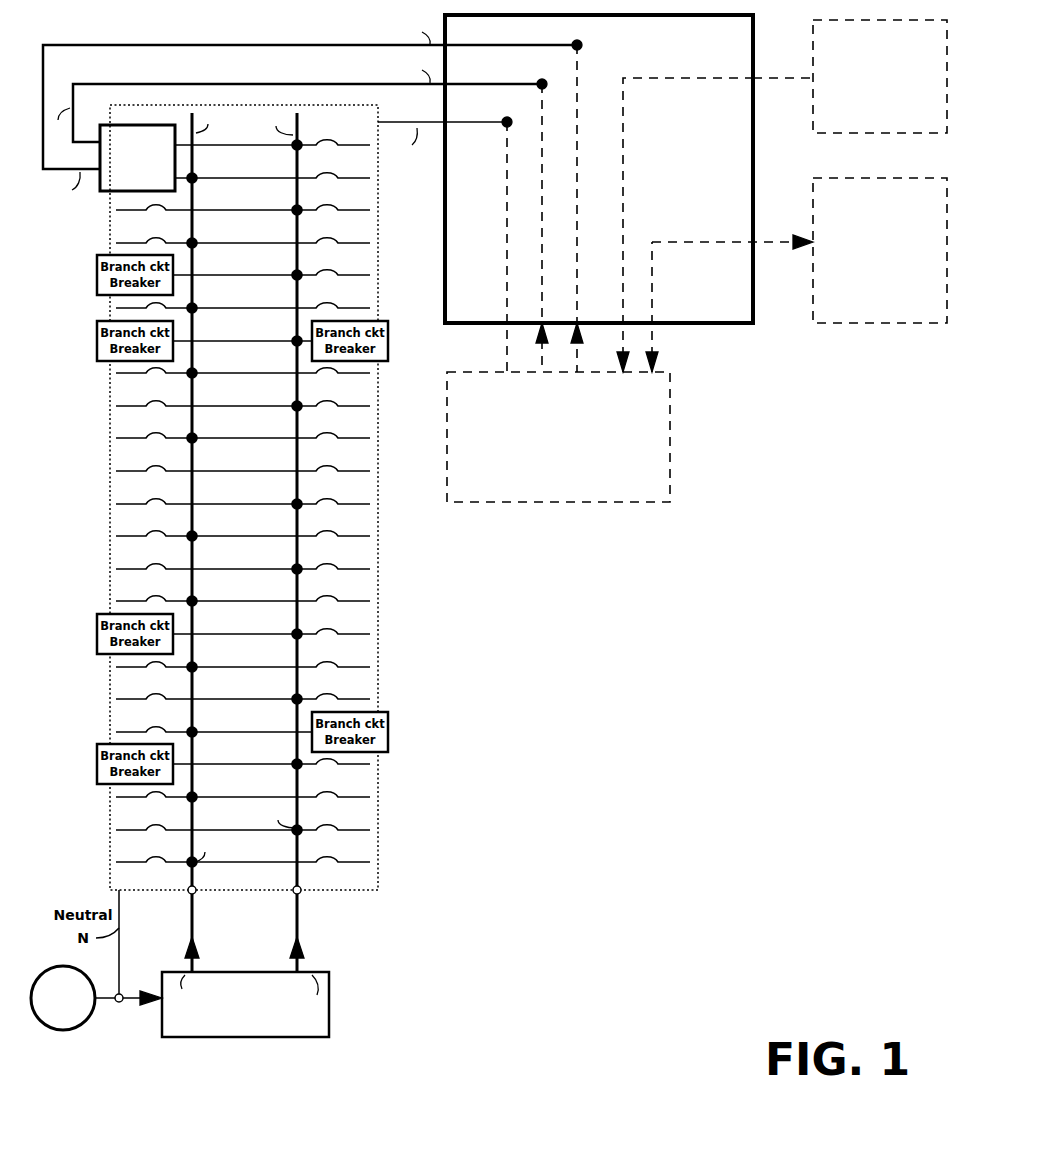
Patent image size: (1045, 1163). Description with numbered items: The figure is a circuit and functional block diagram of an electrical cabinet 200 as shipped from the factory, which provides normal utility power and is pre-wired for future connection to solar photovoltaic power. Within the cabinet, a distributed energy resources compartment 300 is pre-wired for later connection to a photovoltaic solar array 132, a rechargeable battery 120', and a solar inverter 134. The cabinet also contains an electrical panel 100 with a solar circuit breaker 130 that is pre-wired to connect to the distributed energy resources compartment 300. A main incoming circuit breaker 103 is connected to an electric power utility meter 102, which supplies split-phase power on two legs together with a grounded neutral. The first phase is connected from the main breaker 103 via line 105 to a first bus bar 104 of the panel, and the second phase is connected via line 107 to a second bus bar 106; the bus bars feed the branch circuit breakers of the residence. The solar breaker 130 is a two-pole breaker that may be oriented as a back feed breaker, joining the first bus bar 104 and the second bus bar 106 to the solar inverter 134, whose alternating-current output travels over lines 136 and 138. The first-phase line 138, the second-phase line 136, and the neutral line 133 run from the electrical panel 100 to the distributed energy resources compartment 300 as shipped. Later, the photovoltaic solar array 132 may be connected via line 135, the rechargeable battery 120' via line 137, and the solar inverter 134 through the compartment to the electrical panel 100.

The electrical panel 100 is at (433, 569).
The electric power utility meter 102 is at (75, 1032).
The main incoming circuit breaker 103 is at (162, 1018).
The bus bar 104 is at (188, 886).
The line 105 is at (187, 945).
The bus bar 106 is at (297, 886).
The line 107 is at (307, 947).
The rechargeable battery 120' is at (880, 250).
The solar circuit breaker 130 is at (137, 158).
The photovoltaic solar array 132 is at (880, 76).
The neutral N line 133 is at (428, 119).
The solar inverter 134 is at (558, 437).
The line 135 is at (799, 73).
The line 136 is at (158, 83).
The line 137 is at (799, 237).
The line 138 is at (118, 49).
The electrical cabinet 200 is at (712, 772).
The distributed energy resources compartment 300 is at (753, 405).